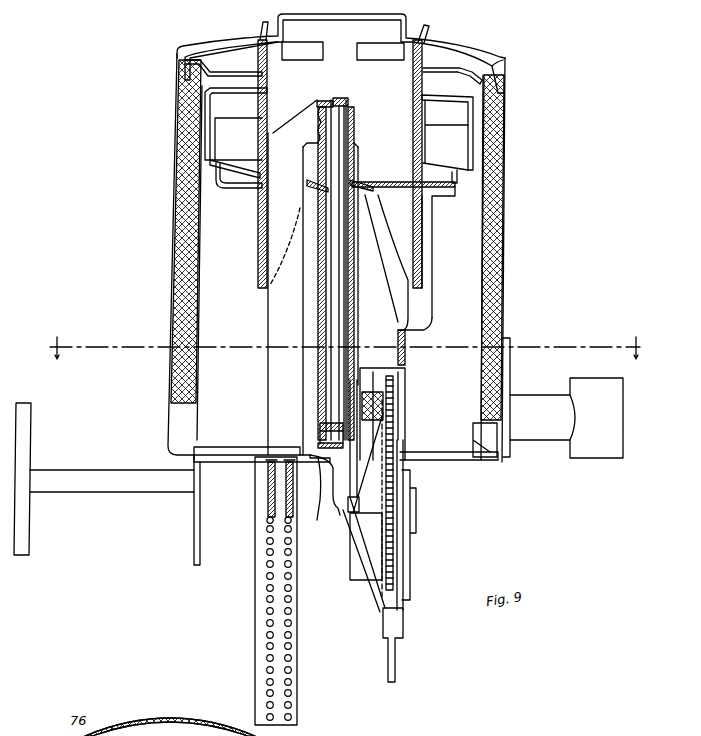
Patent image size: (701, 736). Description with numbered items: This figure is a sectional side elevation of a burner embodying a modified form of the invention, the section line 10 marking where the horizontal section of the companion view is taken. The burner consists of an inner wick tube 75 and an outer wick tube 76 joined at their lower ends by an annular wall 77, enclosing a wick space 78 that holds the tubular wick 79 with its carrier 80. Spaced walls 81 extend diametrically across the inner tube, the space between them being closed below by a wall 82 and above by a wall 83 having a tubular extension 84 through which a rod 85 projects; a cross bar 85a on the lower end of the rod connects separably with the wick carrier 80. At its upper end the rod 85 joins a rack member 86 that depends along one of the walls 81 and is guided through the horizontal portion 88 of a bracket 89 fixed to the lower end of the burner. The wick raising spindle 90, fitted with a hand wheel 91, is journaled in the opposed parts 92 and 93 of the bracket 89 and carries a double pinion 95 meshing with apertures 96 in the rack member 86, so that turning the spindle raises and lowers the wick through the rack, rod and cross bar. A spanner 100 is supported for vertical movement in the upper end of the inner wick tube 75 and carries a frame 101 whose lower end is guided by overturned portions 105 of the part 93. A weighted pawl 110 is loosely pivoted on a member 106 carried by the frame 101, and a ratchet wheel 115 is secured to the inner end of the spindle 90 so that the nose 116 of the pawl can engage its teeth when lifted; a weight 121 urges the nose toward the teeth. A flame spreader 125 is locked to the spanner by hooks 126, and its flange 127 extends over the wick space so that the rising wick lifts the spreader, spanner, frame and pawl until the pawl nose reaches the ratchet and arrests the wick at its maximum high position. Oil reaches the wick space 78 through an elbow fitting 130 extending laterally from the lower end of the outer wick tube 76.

The section line 10 is at (345, 349).
The inner wick tube 75 is at (198, 308).
The outer wick tube 76 is at (182, 303).
The annular wall 77 is at (458, 467).
The wick space 78 is at (490, 447).
The tubular wick 79 is at (505, 143).
The wick carrier 80 is at (502, 222).
The walls 81 is at (318, 290).
The lower wall 82 is at (336, 515).
The upper wall 83 is at (323, 205).
The tubular extension 84 is at (348, 165).
The rod 85 is at (348, 113).
The cross bar 85a is at (320, 425).
The rack member 86 is at (303, 118).
The horizontal portion of bracket 88 is at (239, 447).
The bracket 89 is at (345, 560).
The wick raising spindle 90 is at (160, 487).
The hand wheel 91 is at (32, 437).
The bracket part 92 is at (192, 547).
The bracket part 93 is at (365, 446).
The pinion 95 is at (278, 493).
The apertures 96 is at (268, 576).
The spanner 100 is at (252, 192).
The frame 101 is at (405, 338).
The overturned portions 105 is at (403, 622).
The pivotal member 106 is at (416, 520).
The weighted pawl 110 is at (407, 548).
The ratchet wheel 115 is at (393, 478).
The pawl nose 116 is at (355, 554).
The weight 121 is at (375, 370).
The flame spreader 125 is at (343, 62).
The hooks 126 is at (403, 250).
The flange 127 is at (507, 72).
The elbow fitting 130 is at (540, 397).